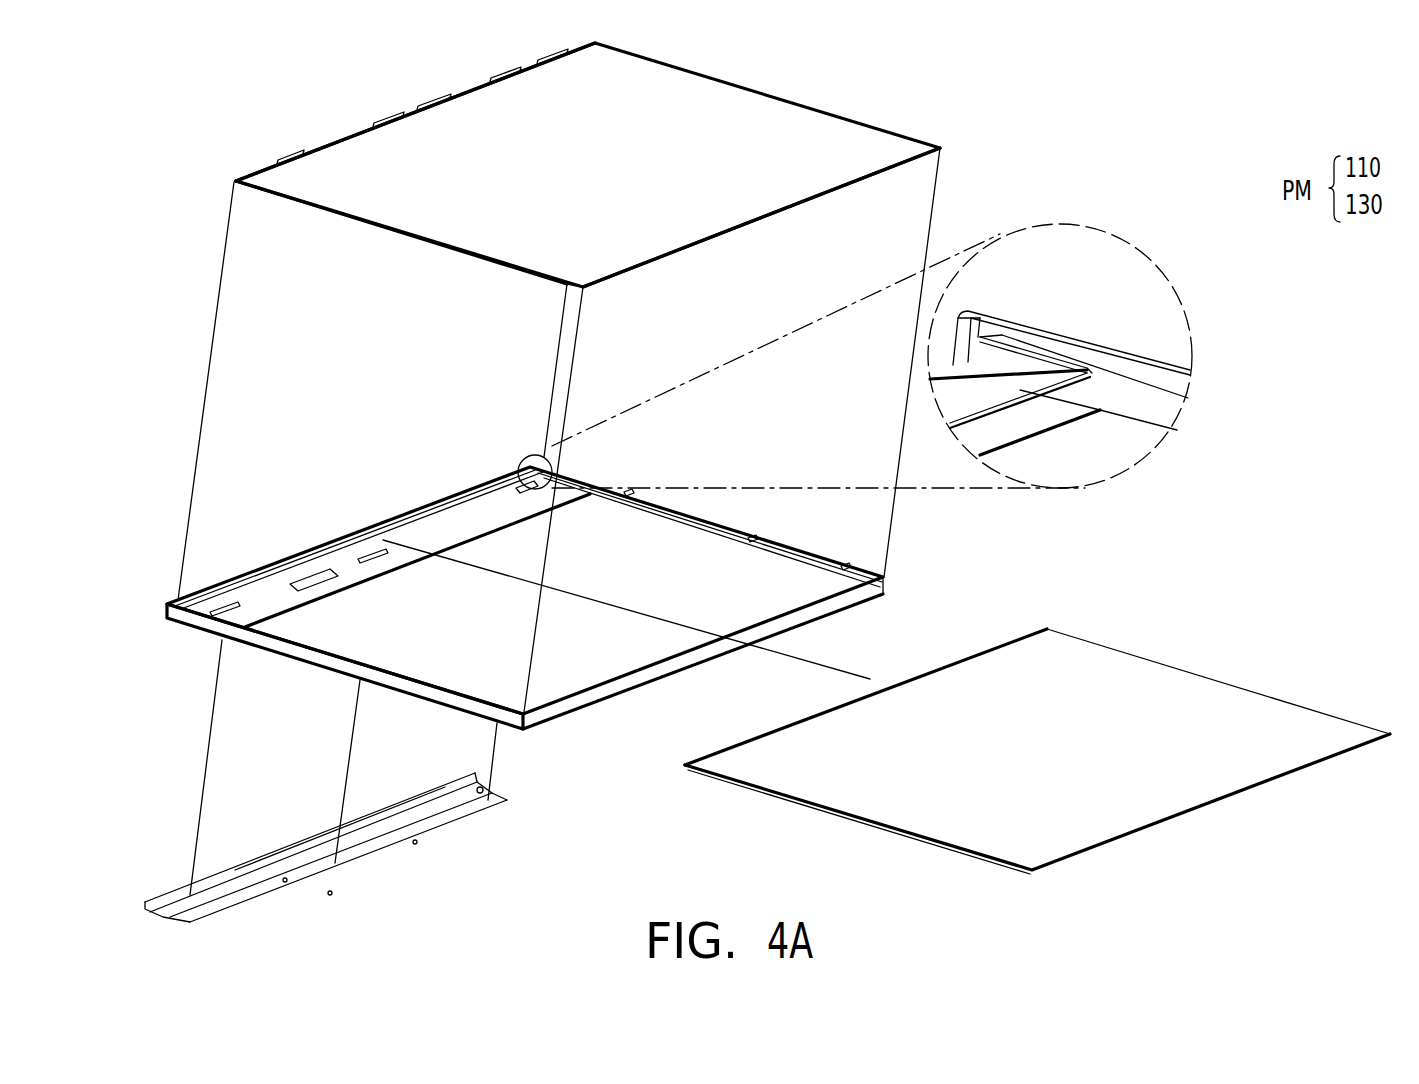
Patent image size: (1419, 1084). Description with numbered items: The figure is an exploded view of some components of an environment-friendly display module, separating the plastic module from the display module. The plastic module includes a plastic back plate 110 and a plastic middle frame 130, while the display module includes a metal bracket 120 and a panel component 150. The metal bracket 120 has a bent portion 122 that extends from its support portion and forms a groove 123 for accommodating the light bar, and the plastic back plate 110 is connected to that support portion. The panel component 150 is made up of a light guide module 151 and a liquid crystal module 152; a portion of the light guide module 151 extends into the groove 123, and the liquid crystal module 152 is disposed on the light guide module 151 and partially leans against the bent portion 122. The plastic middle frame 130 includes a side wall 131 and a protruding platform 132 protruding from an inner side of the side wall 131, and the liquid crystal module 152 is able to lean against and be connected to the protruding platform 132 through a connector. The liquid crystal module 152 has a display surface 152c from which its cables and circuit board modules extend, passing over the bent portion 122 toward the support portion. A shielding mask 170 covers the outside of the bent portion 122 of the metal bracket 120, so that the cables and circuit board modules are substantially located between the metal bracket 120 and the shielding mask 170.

The plastic back plate 110 is at (578, 665).
The metal bracket 120 is at (268, 594).
The bent portion 122 is at (1028, 368).
The groove 123 is at (988, 414).
The plastic middle frame 130 is at (857, 593).
The side wall 131 is at (1036, 332).
The protruding platform 132 is at (1143, 380).
The panel component 150 is at (1340, 61).
The light guide module 151 is at (1265, 706).
The liquid crystal module 152 is at (555, 469).
The display surface 152c is at (772, 125).
The shielding mask 170 is at (383, 847).